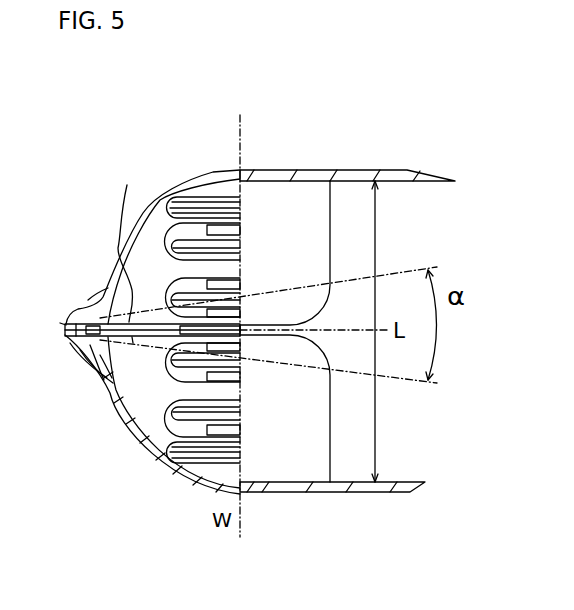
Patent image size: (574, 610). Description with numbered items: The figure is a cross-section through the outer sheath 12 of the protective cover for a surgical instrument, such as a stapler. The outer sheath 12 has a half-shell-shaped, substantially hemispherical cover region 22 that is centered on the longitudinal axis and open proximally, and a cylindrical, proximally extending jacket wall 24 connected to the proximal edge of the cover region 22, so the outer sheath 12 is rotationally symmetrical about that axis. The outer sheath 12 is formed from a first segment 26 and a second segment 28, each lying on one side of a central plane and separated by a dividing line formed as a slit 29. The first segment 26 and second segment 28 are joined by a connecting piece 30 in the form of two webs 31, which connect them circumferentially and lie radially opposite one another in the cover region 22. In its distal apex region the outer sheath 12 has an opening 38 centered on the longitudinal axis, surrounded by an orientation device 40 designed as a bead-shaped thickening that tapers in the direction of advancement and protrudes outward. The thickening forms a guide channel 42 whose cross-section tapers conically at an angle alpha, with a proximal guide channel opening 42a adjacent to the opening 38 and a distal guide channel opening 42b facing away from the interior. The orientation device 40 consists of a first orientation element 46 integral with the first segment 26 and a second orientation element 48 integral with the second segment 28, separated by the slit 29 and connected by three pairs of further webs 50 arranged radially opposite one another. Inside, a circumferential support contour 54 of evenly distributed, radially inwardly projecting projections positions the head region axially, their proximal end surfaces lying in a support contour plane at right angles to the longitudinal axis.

The outer sheath 12 is at (123, 127).
The cover region 22 is at (153, 170).
The second segment 28 is at (183, 175).
The jacket wall 24 is at (300, 167).
The first segment 26 is at (150, 483).
The slit 29 is at (287, 337).
The connecting piece 30 is at (80, 352).
The webs 31 is at (250, 183).
The further webs 50 is at (152, 330).
The opening 38 is at (105, 238).
The proximal guide channel opening 42a is at (125, 253).
The guide channel 42 is at (133, 343).
The distal guide channel opening 42b is at (57, 320).
The orientation device 40 is at (62, 340).
The first orientation element 46 is at (103, 362).
The second orientation element 48 is at (93, 307).
The support contour 54 is at (238, 377).